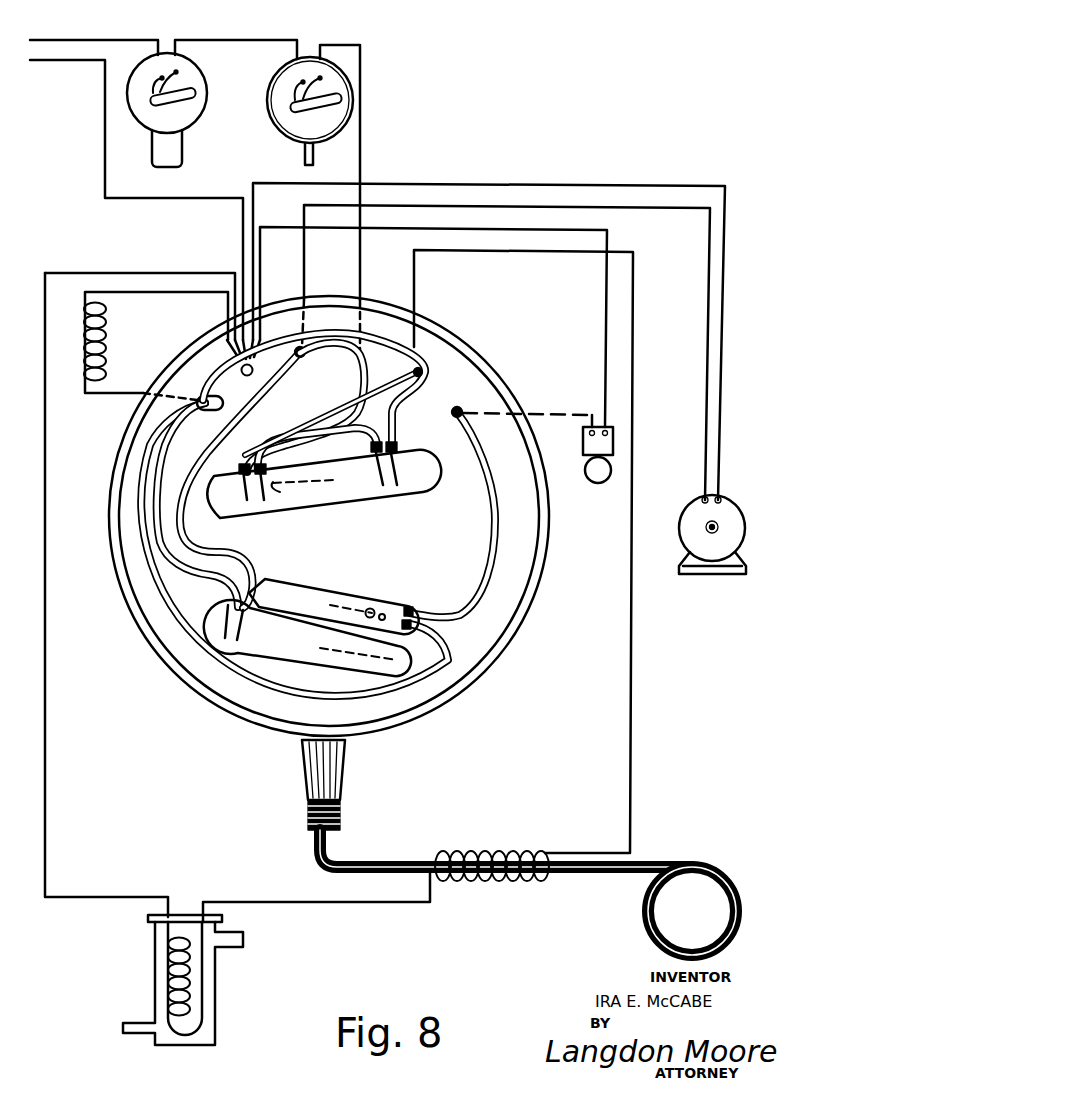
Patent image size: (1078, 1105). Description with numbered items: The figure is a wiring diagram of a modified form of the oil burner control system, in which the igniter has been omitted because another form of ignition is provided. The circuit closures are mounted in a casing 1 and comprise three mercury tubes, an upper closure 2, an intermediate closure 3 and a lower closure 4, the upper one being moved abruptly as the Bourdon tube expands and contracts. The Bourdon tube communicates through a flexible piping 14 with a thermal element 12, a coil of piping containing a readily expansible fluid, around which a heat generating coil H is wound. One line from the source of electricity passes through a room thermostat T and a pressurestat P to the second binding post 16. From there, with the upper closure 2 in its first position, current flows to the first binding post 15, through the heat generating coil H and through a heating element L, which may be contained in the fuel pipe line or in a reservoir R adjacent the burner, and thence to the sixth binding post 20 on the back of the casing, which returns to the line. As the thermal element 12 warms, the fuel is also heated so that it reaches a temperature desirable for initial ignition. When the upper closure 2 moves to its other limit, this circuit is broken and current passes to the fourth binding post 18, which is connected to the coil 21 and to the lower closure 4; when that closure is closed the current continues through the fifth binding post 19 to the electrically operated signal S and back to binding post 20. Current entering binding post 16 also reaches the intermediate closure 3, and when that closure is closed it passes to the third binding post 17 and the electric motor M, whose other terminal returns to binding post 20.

The casing 1 is at (546, 602).
The upper closure 2 is at (413, 478).
The intermediate closure 3 is at (390, 660).
The lower closure 4 is at (380, 603).
The thermal element 12 is at (730, 852).
The flexible piping 14 is at (408, 841).
The first binding post 15 is at (426, 373).
The second binding post 16 is at (367, 350).
The third binding post 17 is at (308, 352).
The fourth binding post 18 is at (203, 413).
The fifth binding post 19 is at (452, 412).
The sixth binding post 20 is at (247, 376).
The coil 21 is at (107, 363).
The room thermostat T is at (182, 150).
The pressurestat P is at (290, 130).
The electrically operated signal S is at (600, 484).
The electric motor M is at (712, 534).
The heat generating coil H is at (535, 850).
The heating element L is at (163, 963).
The reservoir R is at (215, 993).